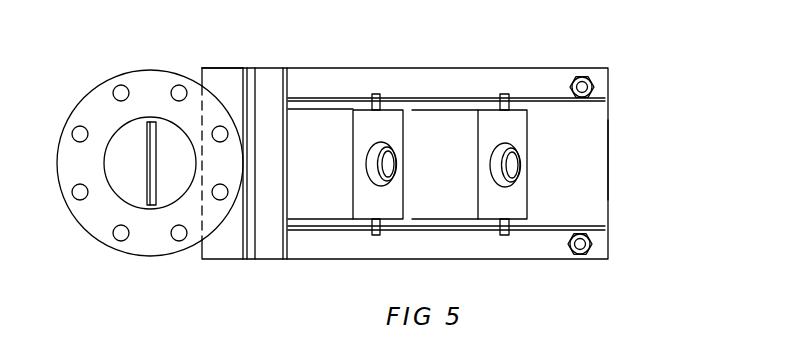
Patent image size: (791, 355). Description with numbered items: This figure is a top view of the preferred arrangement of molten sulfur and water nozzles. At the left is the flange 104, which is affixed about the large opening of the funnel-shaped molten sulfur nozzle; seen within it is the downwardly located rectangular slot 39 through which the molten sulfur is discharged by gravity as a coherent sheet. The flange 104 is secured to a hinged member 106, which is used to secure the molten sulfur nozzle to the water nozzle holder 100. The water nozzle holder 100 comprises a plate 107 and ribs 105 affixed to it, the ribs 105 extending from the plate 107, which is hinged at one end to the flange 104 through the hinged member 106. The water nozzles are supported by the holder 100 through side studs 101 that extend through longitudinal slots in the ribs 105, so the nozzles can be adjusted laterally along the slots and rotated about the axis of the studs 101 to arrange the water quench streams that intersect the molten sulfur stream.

The water nozzle holder 100 is at (418, 68).
The side studs 101 is at (505, 95).
The flange 104 is at (135, 69).
The ribs 105 is at (322, 100).
The hinged member 106 is at (215, 66).
The plate 107 is at (612, 160).
The rectangular slot 39 is at (147, 177).